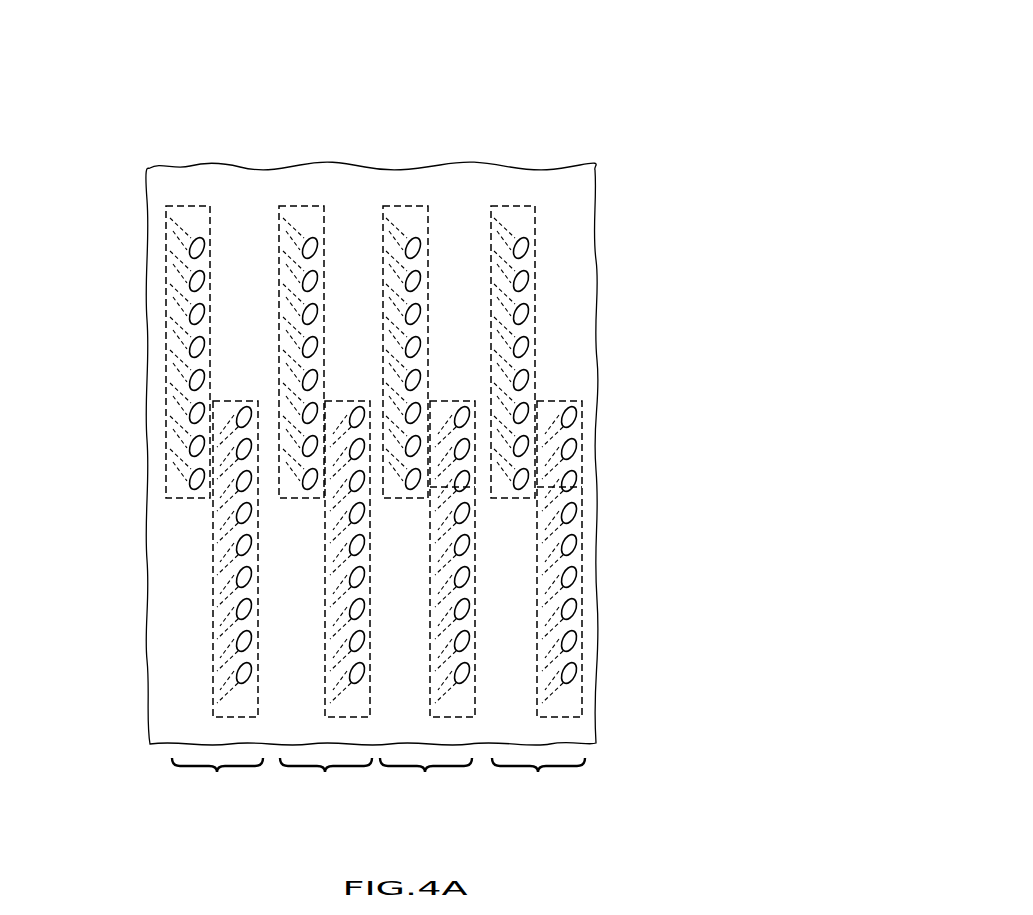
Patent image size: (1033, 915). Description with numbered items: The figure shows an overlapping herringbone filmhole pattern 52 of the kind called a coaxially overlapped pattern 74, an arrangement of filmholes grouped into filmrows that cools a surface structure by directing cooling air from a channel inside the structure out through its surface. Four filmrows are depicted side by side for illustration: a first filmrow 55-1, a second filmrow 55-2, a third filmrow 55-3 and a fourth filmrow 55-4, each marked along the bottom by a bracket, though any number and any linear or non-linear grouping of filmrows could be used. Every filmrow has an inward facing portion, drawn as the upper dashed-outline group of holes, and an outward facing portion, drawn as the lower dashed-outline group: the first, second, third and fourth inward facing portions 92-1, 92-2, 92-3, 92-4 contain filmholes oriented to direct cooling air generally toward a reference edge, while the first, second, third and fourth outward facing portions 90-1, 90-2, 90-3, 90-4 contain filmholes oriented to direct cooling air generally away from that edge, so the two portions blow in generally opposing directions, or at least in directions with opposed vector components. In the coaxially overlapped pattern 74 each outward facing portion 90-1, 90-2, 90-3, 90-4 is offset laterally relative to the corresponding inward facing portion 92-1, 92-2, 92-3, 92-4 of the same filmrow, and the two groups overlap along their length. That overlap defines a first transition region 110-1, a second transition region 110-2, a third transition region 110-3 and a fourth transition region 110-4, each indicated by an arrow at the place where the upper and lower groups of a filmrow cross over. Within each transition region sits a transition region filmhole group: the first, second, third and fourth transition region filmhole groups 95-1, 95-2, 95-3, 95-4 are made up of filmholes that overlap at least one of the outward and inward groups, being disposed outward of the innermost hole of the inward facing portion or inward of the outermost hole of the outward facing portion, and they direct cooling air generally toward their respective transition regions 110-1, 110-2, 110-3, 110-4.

The overlapping herringbone filmhole pattern 52 is at (93, 624).
The coaxially overlapped pattern 74 is at (641, 69).
The first inward facing portion 92-1 is at (176, 206).
The second inward facing portion 92-2 is at (307, 206).
The third inward facing portion 92-3 is at (416, 206).
The fourth inward facing portion 92-4 is at (520, 206).
The first outward facing portion 90-1 is at (215, 642).
The second outward facing portion 90-2 is at (325, 692).
The third outward facing portion 90-3 is at (475, 583).
The fourth outward facing portion 90-4 is at (583, 675).
The first transition region filmhole group 95-1 is at (167, 477).
The second transition region filmhole group 95-2 is at (295, 499).
The third transition region filmhole group 95-3 is at (453, 400).
The fourth transition region filmhole group 95-4 is at (573, 402).
The first transition region 110-1 is at (210, 430).
The second transition region 110-2 is at (326, 430).
The third transition region 110-3 is at (430, 424).
The fourth transition region 110-4 is at (538, 416).
The first filmrow 55-1 is at (217, 780).
The second filmrow 55-2 is at (326, 780).
The third filmrow 55-3 is at (426, 780).
The fourth filmrow 55-4 is at (538, 780).